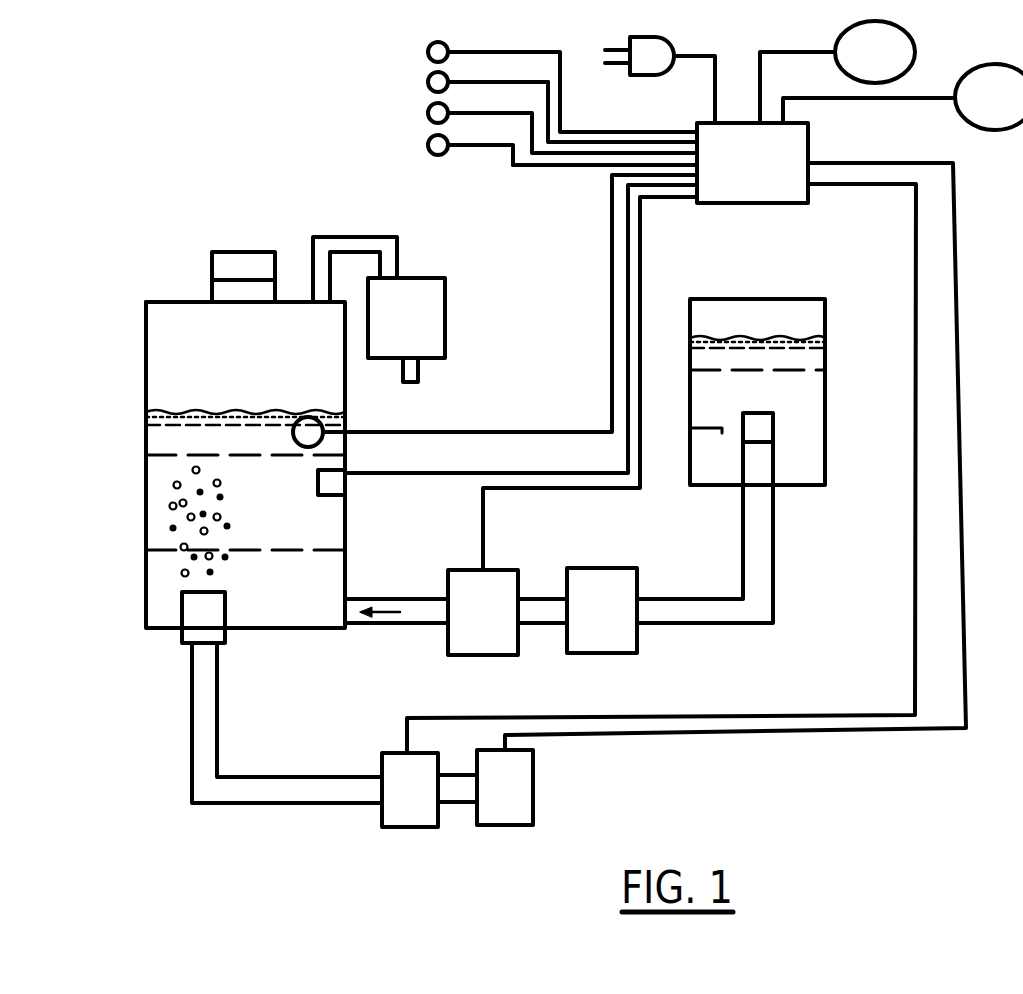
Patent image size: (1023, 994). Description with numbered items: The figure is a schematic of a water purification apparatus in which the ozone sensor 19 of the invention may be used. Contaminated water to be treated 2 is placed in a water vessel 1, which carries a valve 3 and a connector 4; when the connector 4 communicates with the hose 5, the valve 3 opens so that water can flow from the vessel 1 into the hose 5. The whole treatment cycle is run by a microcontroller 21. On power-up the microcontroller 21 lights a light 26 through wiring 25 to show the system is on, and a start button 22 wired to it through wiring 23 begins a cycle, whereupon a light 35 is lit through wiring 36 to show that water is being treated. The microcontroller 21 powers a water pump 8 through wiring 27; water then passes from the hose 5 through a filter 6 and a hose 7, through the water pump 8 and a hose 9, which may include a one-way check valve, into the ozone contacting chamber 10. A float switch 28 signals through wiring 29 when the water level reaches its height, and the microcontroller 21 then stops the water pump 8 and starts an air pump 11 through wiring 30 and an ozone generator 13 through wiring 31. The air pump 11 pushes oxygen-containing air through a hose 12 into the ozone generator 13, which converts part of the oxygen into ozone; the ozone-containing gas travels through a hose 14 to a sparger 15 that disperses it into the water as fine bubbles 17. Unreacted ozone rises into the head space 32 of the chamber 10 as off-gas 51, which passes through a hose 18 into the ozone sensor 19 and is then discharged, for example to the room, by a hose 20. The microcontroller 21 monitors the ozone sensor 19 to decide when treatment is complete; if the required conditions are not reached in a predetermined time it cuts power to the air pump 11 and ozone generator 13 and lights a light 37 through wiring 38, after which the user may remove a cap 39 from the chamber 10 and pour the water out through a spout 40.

The water vessel 1 is at (825, 367).
The water to be treated 2 is at (772, 345).
The valve 3 is at (762, 428).
The connector 4 is at (760, 466).
The hose 5 is at (760, 563).
The filter 6 is at (603, 650).
The hose 7 is at (548, 630).
The water pump 8 is at (478, 645).
The hose 9 is at (420, 628).
The ozone contacting chamber 10 is at (350, 552).
The air pump 11 is at (508, 812).
The hose 12 is at (455, 795).
The ozone generator 13 is at (405, 815).
The hose 14 is at (200, 727).
The sparger 15 is at (215, 608).
The bubbles 17 is at (190, 518).
The hose 18 is at (374, 240).
The ozone sensor 19 is at (435, 298).
The hose 20 is at (418, 370).
The microcontroller 21 is at (738, 190).
The start button 22 is at (875, 52).
The wiring 23 is at (756, 65).
The wiring 25 is at (545, 167).
The light 26 is at (427, 145).
The wiring 27 is at (628, 493).
The float switch 28 is at (310, 418).
The wiring 29 is at (568, 428).
The wiring 30 is at (848, 732).
The wiring 31 is at (757, 713).
The head space 32 is at (155, 300).
The light 35 is at (427, 82).
The wiring 36 is at (497, 80).
The light 37 is at (427, 51).
The wiring 38 is at (562, 62).
The cap 39 is at (240, 262).
The spout 40 is at (240, 288).
The off-gas 51 is at (158, 365).